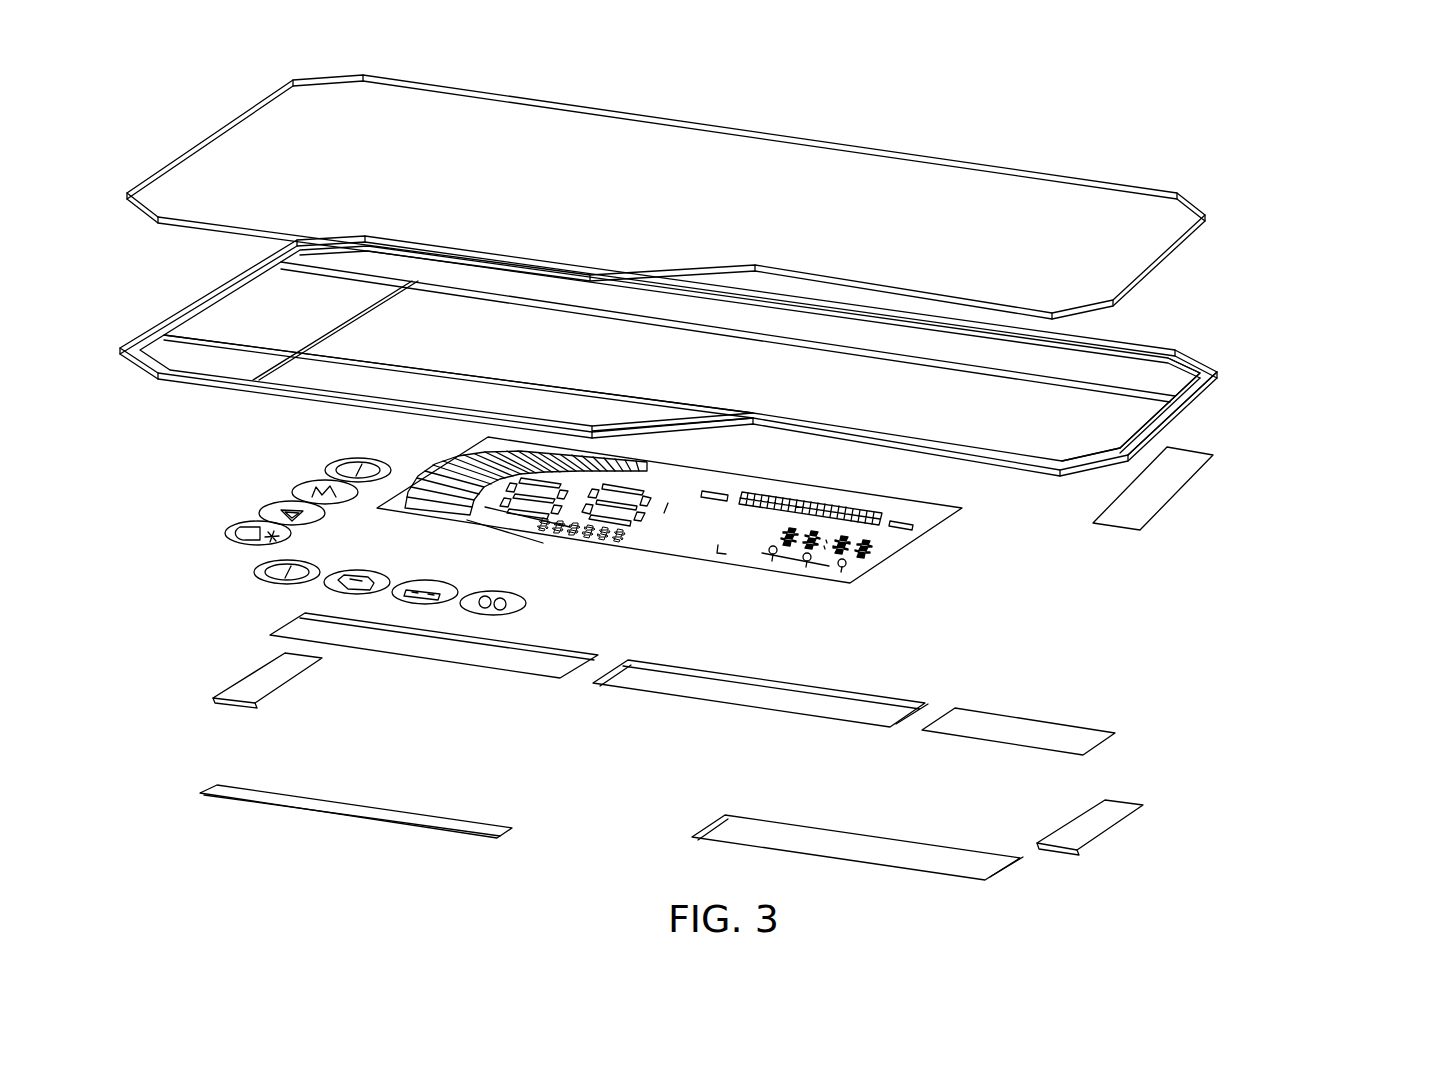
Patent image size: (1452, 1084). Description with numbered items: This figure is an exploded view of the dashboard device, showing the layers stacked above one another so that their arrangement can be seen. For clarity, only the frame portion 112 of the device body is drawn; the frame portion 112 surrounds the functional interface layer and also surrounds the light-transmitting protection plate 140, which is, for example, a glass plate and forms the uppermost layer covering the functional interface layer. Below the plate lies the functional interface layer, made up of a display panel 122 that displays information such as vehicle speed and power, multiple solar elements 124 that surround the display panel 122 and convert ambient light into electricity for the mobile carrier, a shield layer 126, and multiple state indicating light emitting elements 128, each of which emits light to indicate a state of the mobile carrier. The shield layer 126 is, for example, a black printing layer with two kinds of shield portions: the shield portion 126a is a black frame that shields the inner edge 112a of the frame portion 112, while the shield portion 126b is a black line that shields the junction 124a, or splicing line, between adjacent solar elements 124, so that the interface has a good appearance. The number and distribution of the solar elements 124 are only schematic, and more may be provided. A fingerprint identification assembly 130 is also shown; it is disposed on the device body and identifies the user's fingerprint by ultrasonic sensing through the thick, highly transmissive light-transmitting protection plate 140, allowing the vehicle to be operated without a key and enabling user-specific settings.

The light-transmitting protection plate 140 is at (1038, 218).
The frame portion 112 is at (1158, 415).
The inner edge 112a is at (1117, 447).
The shield layer 126 is at (1279, 360).
The shield portion 126a is at (1122, 427).
The shield portion 126b is at (1093, 379).
The fingerprint identification assembly 130 is at (1157, 487).
The display panel 122 is at (930, 523).
The state indicating light emitting elements 128 is at (226, 533).
The solar elements 124 is at (883, 857).
The junction 124a is at (298, 648).